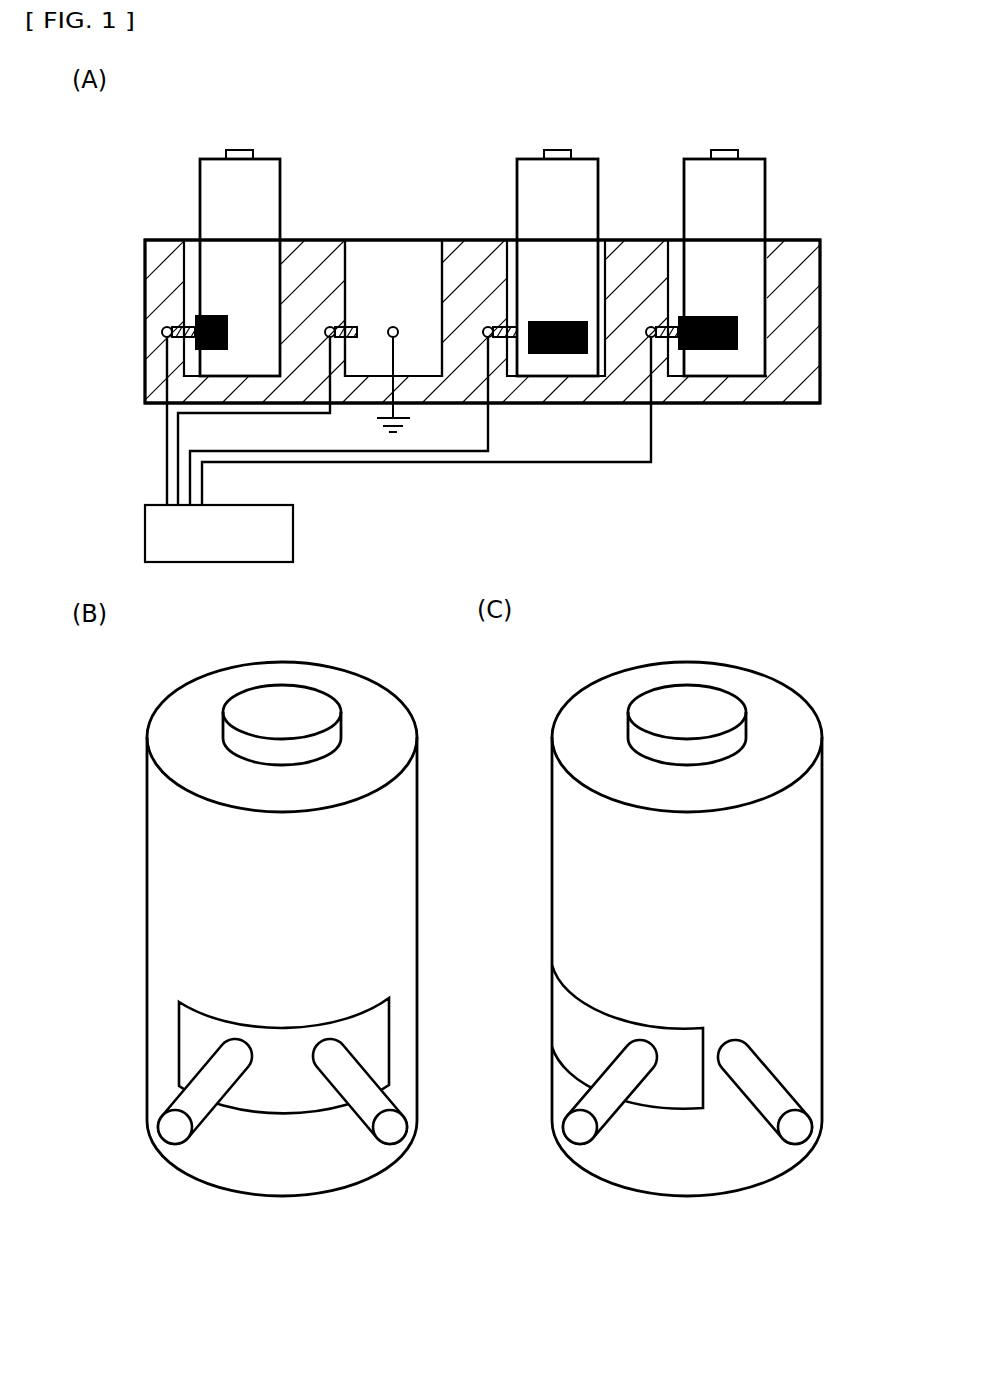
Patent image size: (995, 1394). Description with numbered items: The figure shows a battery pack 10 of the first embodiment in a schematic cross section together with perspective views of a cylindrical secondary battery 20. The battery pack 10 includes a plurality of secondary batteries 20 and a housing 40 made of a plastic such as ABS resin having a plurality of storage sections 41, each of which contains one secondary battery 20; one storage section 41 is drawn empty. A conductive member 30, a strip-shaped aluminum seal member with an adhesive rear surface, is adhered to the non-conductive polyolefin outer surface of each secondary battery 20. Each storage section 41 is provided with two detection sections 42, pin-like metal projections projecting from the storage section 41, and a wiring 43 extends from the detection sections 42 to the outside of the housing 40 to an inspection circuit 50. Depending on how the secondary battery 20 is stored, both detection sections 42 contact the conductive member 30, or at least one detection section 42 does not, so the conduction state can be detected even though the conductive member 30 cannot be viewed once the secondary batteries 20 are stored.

The battery pack 10 is at (329, 172).
The secondary battery 20 is at (556, 178).
The conductive member 30 is at (723, 352).
The housing 40 is at (640, 258).
The storage section 41 is at (397, 276).
The detection section 42 is at (489, 327).
The wiring 43 is at (389, 421).
The inspection circuit 50 is at (219, 522).